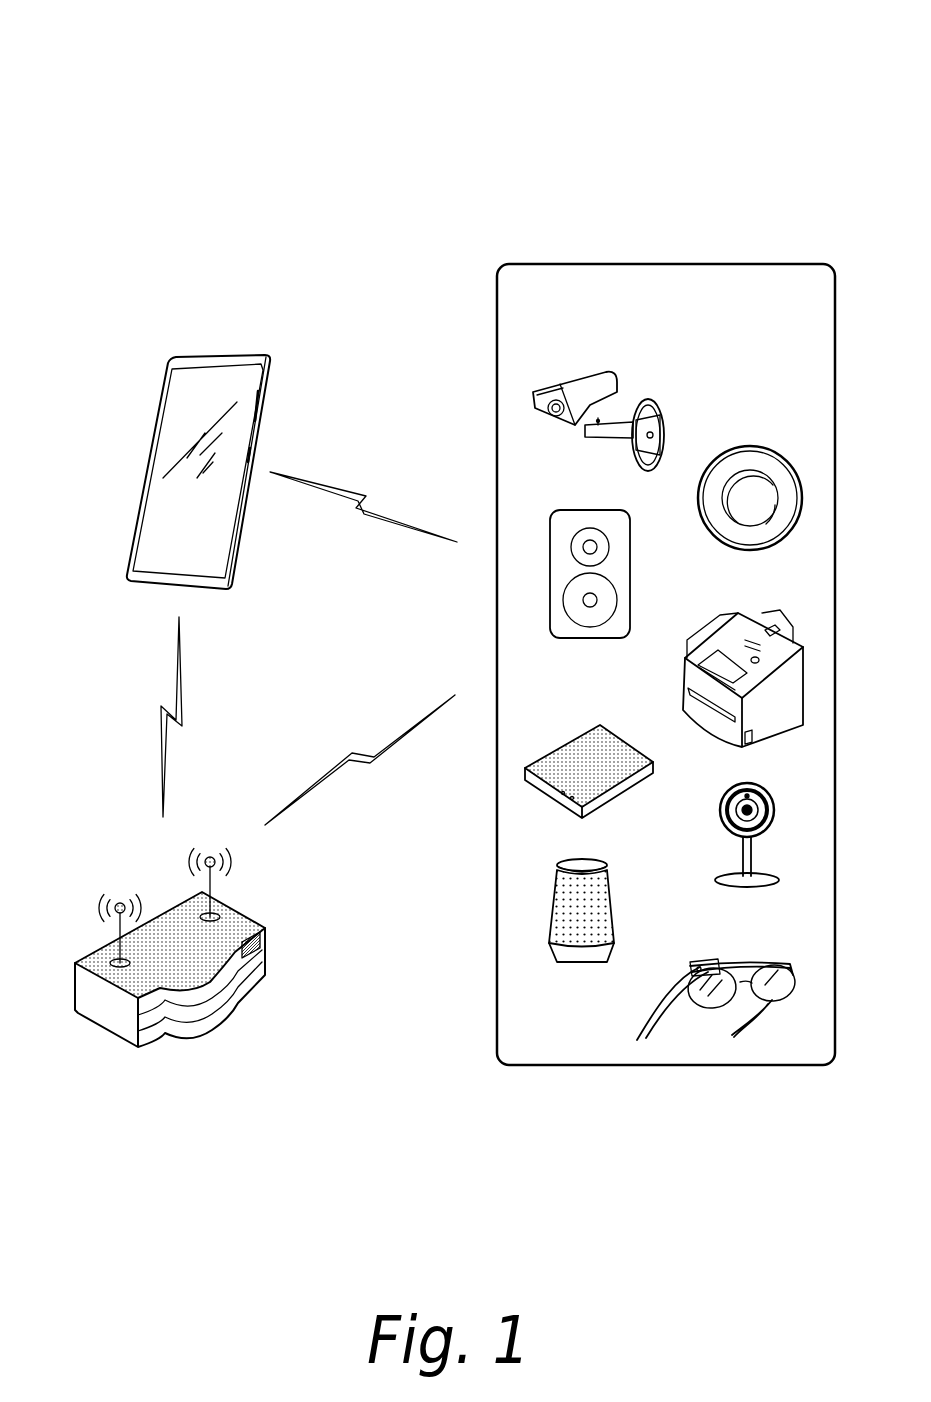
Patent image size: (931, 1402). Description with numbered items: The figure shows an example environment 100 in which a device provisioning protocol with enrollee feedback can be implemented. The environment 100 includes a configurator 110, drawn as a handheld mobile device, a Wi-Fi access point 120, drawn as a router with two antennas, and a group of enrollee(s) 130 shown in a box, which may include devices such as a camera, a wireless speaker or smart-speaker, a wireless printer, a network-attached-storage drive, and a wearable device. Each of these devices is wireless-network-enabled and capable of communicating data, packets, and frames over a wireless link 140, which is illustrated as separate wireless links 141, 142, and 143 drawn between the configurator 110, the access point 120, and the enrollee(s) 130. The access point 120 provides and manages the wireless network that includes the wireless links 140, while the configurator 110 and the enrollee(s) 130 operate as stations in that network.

The example environment 100 is at (120, 30).
The configurator 110 is at (276, 350).
The Wi-Fi access point 120 is at (275, 923).
The enrollee(s) 130 is at (649, 323).
The wireless link 140 is at (360, 386).
The wireless link 141 is at (326, 486).
The wireless link 142 is at (190, 672).
The wireless link 143 is at (366, 783).